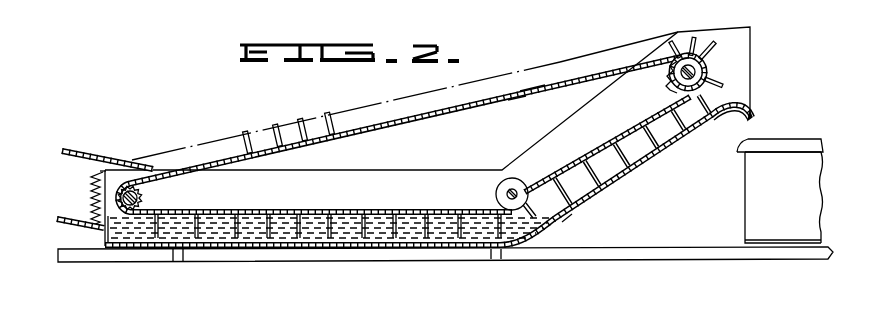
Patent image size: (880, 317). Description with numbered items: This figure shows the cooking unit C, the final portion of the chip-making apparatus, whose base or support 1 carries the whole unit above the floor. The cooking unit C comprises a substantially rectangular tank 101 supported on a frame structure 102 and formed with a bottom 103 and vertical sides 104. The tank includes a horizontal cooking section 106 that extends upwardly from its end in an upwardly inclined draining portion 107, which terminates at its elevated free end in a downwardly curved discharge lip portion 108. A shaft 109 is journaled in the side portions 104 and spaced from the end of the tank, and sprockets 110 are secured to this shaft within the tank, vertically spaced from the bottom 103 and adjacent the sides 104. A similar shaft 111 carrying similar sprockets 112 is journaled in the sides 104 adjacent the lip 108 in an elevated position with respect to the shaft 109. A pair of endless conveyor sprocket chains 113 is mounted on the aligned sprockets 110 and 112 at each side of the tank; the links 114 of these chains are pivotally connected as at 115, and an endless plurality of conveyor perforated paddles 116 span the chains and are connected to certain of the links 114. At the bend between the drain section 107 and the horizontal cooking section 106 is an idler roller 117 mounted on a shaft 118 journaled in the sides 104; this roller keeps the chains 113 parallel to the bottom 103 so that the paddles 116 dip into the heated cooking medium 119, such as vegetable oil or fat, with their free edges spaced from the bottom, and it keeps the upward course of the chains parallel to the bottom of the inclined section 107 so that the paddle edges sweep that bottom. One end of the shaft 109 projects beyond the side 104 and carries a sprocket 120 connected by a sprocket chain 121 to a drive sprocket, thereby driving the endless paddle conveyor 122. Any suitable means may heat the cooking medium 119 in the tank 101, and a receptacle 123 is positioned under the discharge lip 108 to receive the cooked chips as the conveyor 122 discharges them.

The base plate 1 is at (630, 250).
The tank 101 is at (211, 249).
The frame structure 102 is at (528, 250).
The bottom 103 is at (636, 156).
The vertical sides 104 is at (366, 177).
The horizontal cooking section 106 is at (322, 218).
The inclined draining portion 107 is at (618, 184).
The discharge lip portion 108 is at (753, 99).
The shaft 109 is at (80, 234).
The sprockets 110 is at (142, 191).
The shaft 111 is at (709, 49).
The sprockets 112 is at (670, 82).
The endless conveyor sprocket chains 113 is at (446, 116).
The links 114 is at (518, 99).
The pivotal connection 115 is at (531, 88).
The conveyor perforated paddles 116 is at (303, 122).
The idler roller 117 is at (524, 183).
The shaft 118 is at (577, 215).
The heated cooking medium 119 is at (407, 236).
The sprocket 120 is at (90, 190).
The sprocket chain 121 is at (110, 138).
The endless paddle conveyor 122 is at (212, 157).
The receptacle 123 is at (746, 203).
The cooking unit C is at (583, 57).